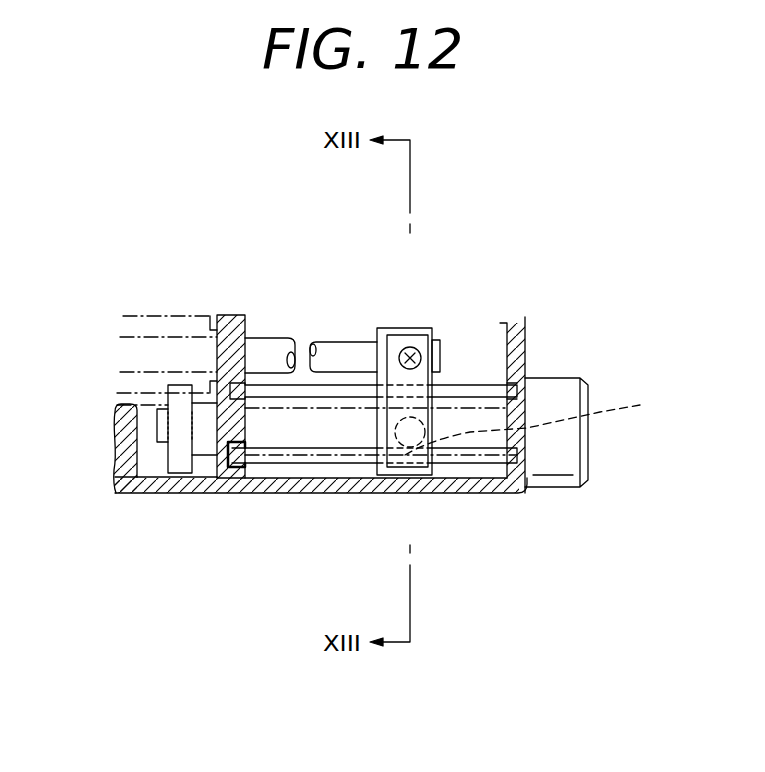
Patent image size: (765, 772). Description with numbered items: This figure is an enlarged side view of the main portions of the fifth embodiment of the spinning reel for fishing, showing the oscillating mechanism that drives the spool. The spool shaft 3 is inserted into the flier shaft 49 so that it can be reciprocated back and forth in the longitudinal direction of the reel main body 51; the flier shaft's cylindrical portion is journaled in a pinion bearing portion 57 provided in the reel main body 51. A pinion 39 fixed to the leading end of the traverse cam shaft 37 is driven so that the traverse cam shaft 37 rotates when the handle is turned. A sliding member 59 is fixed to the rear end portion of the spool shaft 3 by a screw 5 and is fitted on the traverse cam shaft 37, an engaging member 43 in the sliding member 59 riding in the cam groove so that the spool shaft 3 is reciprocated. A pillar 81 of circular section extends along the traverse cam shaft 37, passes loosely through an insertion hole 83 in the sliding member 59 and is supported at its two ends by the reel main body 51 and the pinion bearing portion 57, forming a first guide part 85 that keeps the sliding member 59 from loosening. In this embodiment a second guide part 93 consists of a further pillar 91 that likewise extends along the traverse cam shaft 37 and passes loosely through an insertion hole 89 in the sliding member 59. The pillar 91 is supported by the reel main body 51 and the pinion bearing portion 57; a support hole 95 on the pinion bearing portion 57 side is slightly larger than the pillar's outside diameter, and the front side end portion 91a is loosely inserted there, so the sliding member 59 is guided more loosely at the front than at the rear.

The spool shaft 3 is at (137, 345).
The flier shaft 49 is at (157, 318).
The pinion bearing portion 57 is at (228, 316).
The insertion hole 83 is at (362, 398).
The sliding member 59 is at (405, 328).
The screw 5 is at (445, 374).
The first guide part 85 is at (485, 388).
The pillar 81 is at (520, 368).
The reel main body 51 is at (527, 375).
The insertion hole 89 is at (537, 422).
The pinion 39 is at (118, 424).
The support hole 95 is at (232, 432).
The front side end portion 91a is at (240, 463).
The traverse cam shaft 37 is at (288, 490).
The engaging member 43 is at (357, 490).
The second guide part 93 is at (459, 475).
The pillar 91 is at (490, 465).